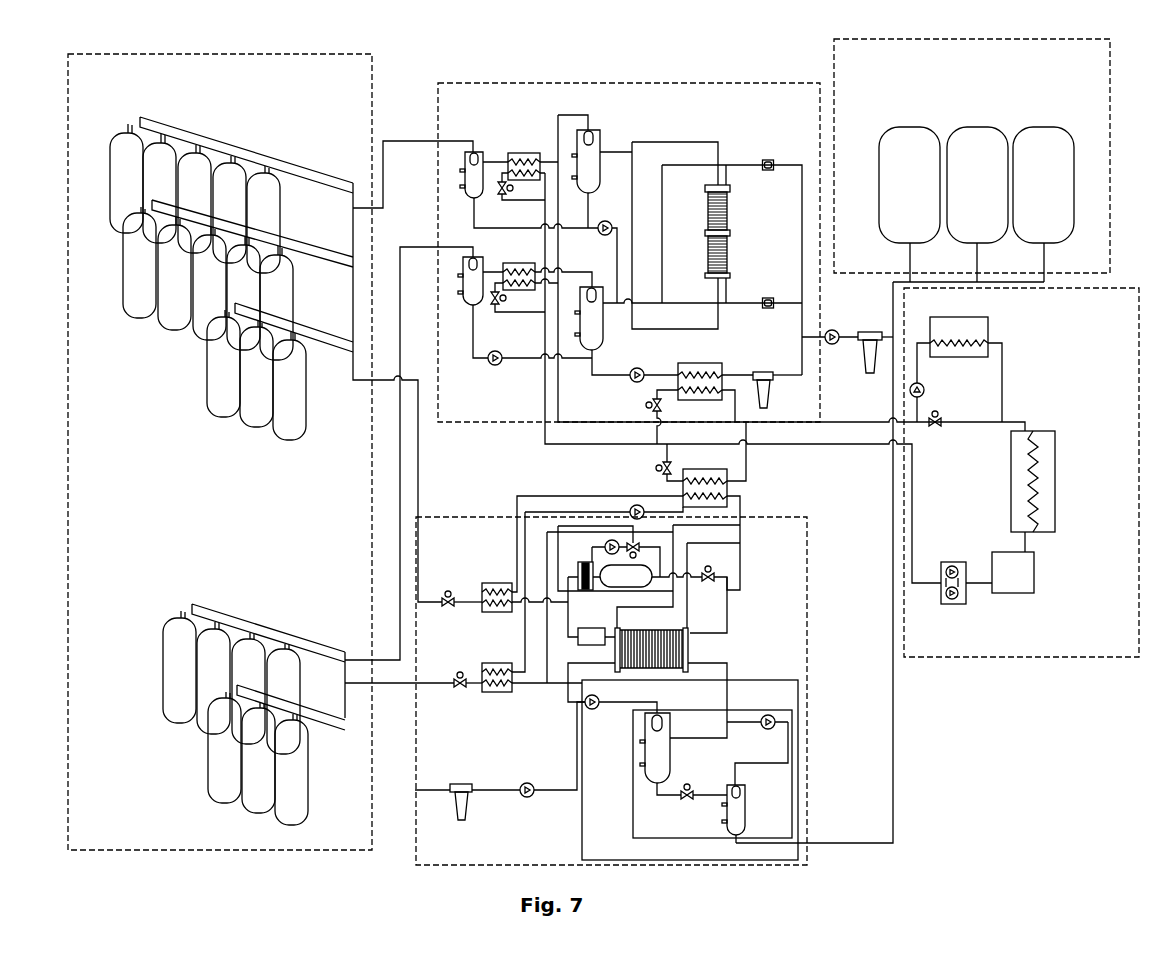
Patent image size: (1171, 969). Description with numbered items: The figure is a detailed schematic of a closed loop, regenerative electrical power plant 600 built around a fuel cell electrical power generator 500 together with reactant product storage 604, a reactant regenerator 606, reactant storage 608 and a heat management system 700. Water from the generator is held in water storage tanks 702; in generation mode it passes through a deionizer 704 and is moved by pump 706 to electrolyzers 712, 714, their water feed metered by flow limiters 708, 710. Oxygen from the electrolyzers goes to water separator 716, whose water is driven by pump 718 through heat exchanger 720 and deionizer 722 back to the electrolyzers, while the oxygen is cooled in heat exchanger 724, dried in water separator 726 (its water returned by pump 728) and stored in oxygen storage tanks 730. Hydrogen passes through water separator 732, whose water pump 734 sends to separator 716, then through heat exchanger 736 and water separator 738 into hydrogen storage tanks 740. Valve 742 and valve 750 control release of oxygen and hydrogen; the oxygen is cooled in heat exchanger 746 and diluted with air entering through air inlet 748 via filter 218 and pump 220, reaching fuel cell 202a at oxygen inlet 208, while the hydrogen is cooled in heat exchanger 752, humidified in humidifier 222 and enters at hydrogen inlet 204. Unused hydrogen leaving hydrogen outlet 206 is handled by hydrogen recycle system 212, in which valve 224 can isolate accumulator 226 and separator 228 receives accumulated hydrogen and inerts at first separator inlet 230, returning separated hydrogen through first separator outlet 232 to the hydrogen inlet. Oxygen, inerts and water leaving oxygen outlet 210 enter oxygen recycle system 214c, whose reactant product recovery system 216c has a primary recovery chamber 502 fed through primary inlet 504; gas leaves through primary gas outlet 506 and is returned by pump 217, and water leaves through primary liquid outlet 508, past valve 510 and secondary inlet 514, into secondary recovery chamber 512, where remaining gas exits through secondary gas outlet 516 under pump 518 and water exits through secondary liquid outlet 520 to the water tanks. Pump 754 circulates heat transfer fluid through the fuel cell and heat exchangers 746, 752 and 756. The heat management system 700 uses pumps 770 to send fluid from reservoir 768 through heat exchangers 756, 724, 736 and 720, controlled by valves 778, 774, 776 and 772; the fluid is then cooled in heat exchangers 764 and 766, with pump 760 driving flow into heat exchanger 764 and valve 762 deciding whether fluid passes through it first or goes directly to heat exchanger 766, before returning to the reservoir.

The electrical power plant 600 is at (516, 54).
The reactant product storage 604 is at (1076, 39).
The reactant regenerator 606 is at (726, 83).
The reactant storage 608 is at (285, 54).
The heat management system 700 is at (1139, 288).
The water storage tanks 702 is at (965, 106).
The deionizer 704 is at (870, 332).
The pump 706 is at (832, 330).
The flow limiter 708 is at (768, 160).
The flow limiter 710 is at (768, 298).
The electrolyzer 712 is at (731, 206).
The electrolyzer 714 is at (731, 250).
The water separator 716 is at (605, 336).
The pump 718 is at (642, 368).
The heat exchanger 720 is at (700, 363).
The deionizer 722 is at (763, 372).
The heat exchanger 724 is at (512, 263).
The water separator 726 is at (483, 258).
The pump 728 is at (500, 351).
The oxygen storage tanks 730 is at (218, 606).
The water separator 732 is at (599, 139).
The pump 734 is at (608, 221).
The heat exchanger 736 is at (517, 153).
The water separator 738 is at (480, 150).
The hydrogen storage tanks 740 is at (240, 132).
The valve 742 is at (460, 691).
The heat exchanger 746 is at (502, 693).
The air inlet 748 is at (419, 791).
The valve 750 is at (449, 595).
The heat exchanger 752 is at (501, 613).
The pump 754 is at (628, 521).
The heat exchanger 756 is at (715, 508).
The pump 760 is at (924, 386).
The valve 762 is at (938, 412).
The heat exchanger 764 is at (988, 318).
The heat exchanger 766 is at (1047, 431).
The reservoir 768 is at (1035, 590).
The pumps 770 is at (966, 604).
The valve 772 is at (649, 405).
The valve 774 is at (503, 299).
The valve 776 is at (507, 190).
The valve 778 is at (659, 468).
The electrical power generator 500 is at (808, 566).
The primary recovery chamber 502 is at (643, 750).
The primary inlet 504 is at (668, 737).
The primary gas outlet 506 is at (651, 715).
The primary liquid outlet 508 is at (656, 787).
The valve 510 is at (689, 787).
The secondary recovery chamber 512 is at (746, 808).
The secondary inlet 514 is at (725, 795).
The secondary gas outlet 516 is at (741, 786).
The pump 518 is at (770, 715).
The secondary liquid outlet 520 is at (735, 840).
The fuel cell 202a is at (655, 670).
The hydrogen inlet 204 is at (615, 645).
The hydrogen outlet 206 is at (690, 637).
The oxygen inlet 208 is at (614, 672).
The oxygen outlet 210 is at (690, 672).
The hydrogen recycle system 212 is at (741, 590).
The oxygen recycle system 214c is at (760, 680).
The reactant product recovery system 216c is at (740, 712).
The pump 217 is at (598, 710).
The filter 218 is at (460, 784).
The pump 220 is at (522, 784).
The humidifier 222 is at (599, 620).
The valve 224 is at (712, 571).
The accumulator 226 is at (635, 587).
The separator 228 is at (578, 567).
The first separator inlet 230 is at (606, 546).
The first separator outlet 232 is at (637, 543).